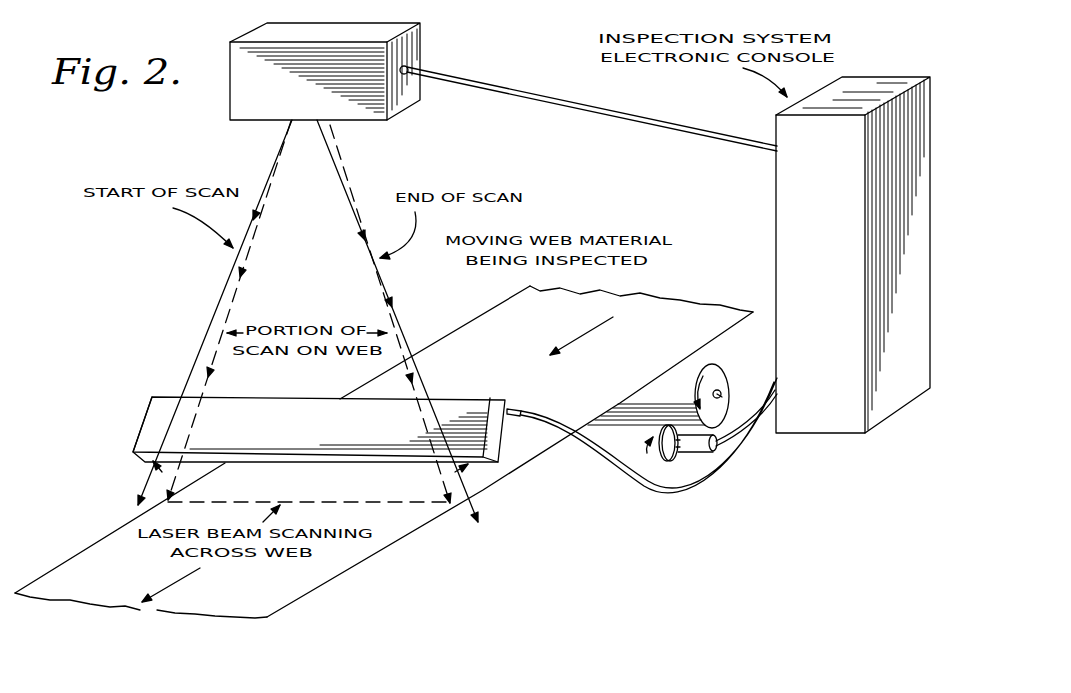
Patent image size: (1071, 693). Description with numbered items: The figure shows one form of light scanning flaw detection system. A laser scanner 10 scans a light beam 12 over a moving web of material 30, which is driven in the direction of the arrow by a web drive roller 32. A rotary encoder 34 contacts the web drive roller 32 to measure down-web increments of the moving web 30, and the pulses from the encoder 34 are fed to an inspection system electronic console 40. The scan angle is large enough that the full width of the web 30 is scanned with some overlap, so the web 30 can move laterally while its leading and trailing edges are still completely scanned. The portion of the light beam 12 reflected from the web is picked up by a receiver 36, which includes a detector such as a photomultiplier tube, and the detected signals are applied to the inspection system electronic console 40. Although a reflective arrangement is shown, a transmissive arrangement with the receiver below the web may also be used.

The laser scanner 10 is at (420, 41).
The light beam 12 is at (337, 173).
The moving web of material 30 is at (327, 577).
The web drive roller 32 is at (727, 378).
The rotary encoder 34 is at (681, 460).
The receiver 36 is at (279, 397).
The inspection system electronic console 40 is at (776, 214).